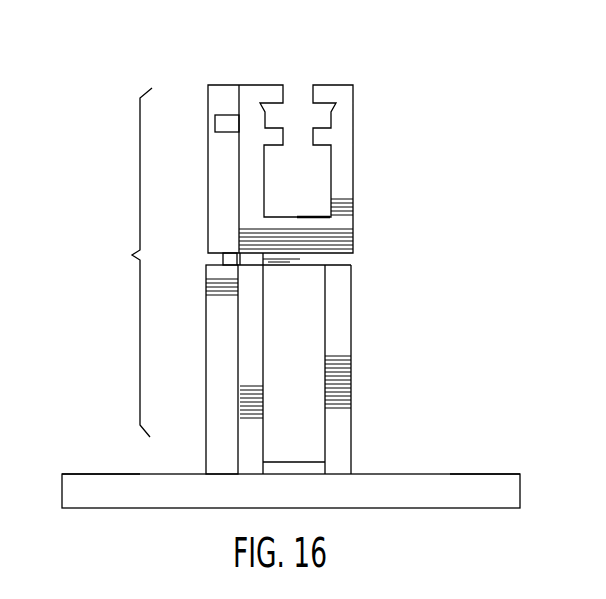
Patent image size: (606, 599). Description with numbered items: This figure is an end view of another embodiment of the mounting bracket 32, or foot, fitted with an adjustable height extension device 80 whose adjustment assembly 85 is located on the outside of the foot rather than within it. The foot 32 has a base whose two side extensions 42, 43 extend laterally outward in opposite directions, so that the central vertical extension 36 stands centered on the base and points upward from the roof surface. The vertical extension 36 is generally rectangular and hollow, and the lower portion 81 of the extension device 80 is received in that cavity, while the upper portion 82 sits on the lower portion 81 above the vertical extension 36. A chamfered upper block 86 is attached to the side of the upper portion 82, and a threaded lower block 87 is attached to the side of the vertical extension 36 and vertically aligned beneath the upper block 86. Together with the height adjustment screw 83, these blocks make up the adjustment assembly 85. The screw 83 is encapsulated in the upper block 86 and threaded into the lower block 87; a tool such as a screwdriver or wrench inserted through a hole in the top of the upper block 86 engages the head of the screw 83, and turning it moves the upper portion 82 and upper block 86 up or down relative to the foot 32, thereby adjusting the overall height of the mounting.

The adjustable height extension device 80 is at (178, 82).
The upper portion 82 is at (353, 102).
The chamfered upper block 86 is at (208, 180).
The adjustment assembly 85 is at (131, 262).
The height adjustment screw 83 is at (223, 258).
The threaded lower block 87 is at (205, 347).
The lower portion 81 is at (317, 332).
The vertical extension 36 is at (366, 365).
The mounting bracket 32 is at (494, 418).
The side extension 42 is at (75, 475).
The side extension 43 is at (520, 474).